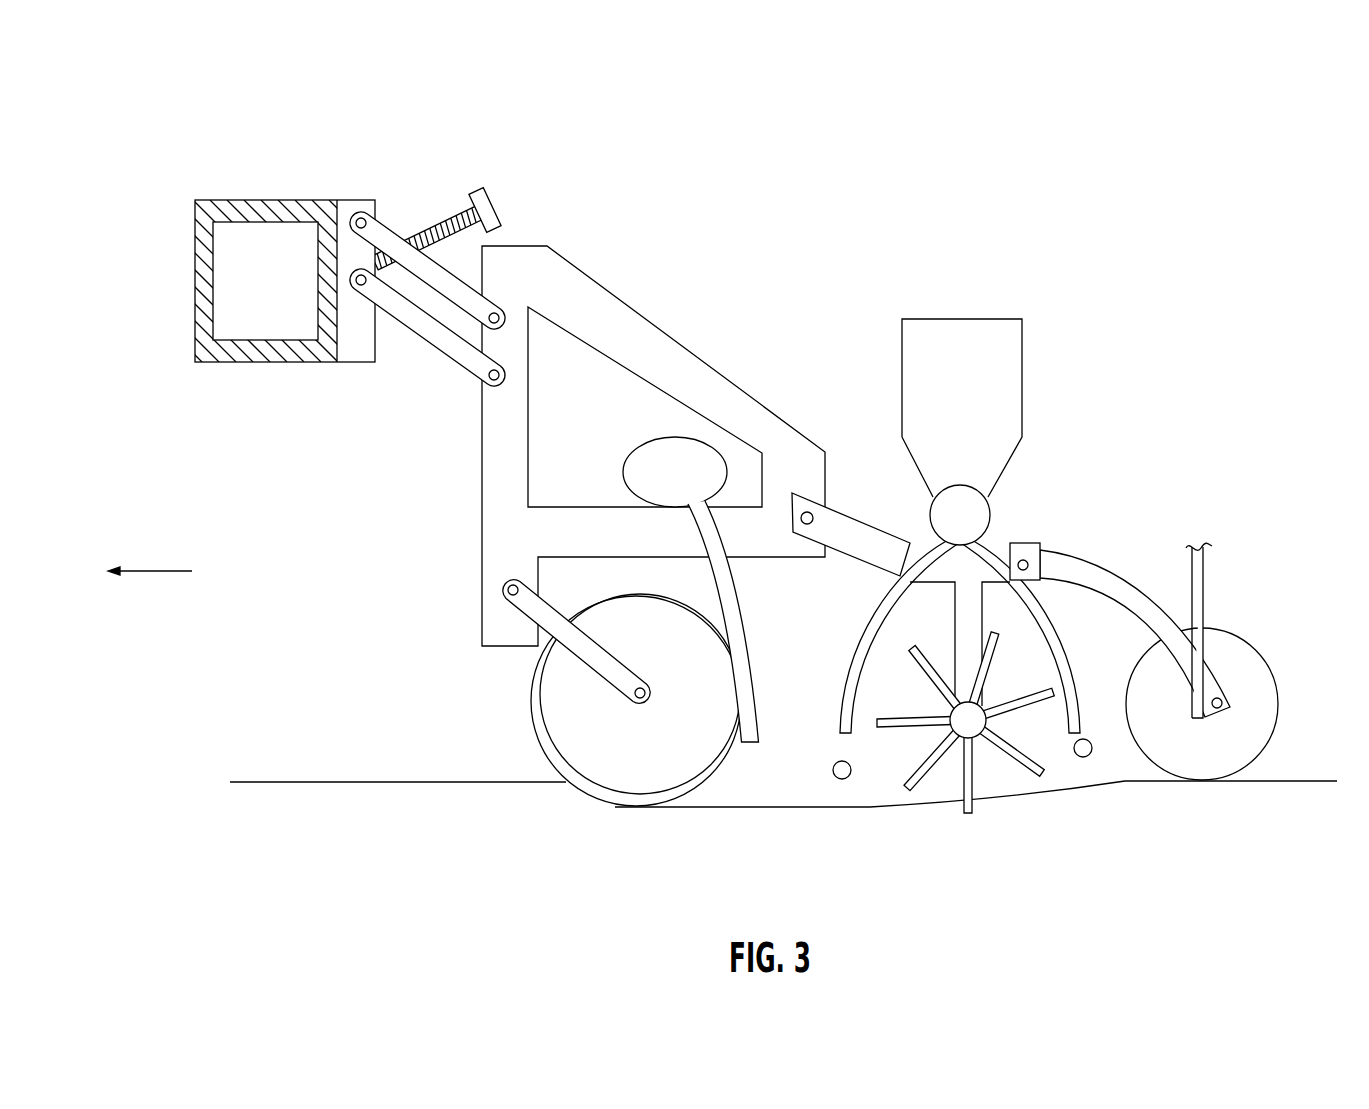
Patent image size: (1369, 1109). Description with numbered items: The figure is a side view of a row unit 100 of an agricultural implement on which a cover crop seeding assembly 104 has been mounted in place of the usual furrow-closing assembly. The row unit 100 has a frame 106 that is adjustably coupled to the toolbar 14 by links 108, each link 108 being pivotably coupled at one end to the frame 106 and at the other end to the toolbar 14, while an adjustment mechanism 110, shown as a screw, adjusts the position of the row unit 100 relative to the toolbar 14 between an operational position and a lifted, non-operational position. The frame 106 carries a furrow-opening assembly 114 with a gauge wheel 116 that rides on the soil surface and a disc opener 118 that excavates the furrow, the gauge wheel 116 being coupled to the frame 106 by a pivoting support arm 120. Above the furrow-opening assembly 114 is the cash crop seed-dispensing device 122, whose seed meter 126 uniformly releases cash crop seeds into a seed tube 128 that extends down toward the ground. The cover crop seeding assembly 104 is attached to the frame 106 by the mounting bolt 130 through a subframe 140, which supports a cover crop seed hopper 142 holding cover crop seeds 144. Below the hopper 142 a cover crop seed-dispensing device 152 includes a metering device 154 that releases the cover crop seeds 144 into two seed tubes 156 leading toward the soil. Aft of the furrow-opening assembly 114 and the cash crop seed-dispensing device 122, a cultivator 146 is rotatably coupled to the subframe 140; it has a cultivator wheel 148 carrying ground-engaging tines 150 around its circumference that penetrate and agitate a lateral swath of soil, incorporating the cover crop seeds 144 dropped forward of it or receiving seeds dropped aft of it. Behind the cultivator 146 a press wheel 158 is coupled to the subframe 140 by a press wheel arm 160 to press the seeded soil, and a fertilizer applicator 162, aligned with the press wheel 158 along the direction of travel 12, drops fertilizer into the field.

The row unit 100 is at (130, 160).
The direction of travel 12 is at (143, 571).
The toolbar 14 is at (248, 362).
The cover crop seeding assembly 104 is at (1122, 495).
The frame 106 is at (663, 343).
The links 108 is at (385, 228).
The adjustment mechanism 110 is at (497, 198).
The furrow-opening assembly 114 is at (500, 737).
The gauge wheel 116 is at (533, 690).
The disc opener 118 is at (598, 802).
The support arm 120 is at (517, 619).
The cash crop seed-dispensing device 122 is at (690, 428).
The seed meter 126 is at (652, 445).
The seed tube 128 is at (757, 651).
The mounting bolt 130 is at (808, 528).
The subframe 140 is at (850, 517).
The cover crop seed hopper 142 is at (990, 318).
The cover crop seeds 144 is at (837, 762).
The cultivator 146 is at (928, 818).
The cultivator wheel 148 is at (985, 742).
The ground-engaging tines 150 is at (923, 660).
The cover crop seed-dispensing device 152 is at (1003, 509).
The metering device 154 is at (930, 518).
The seed tube 156 is at (856, 658).
The press wheel 158 is at (1258, 645).
The press wheel arm 160 is at (1107, 574).
The fertilizer applicator 162 is at (1205, 583).